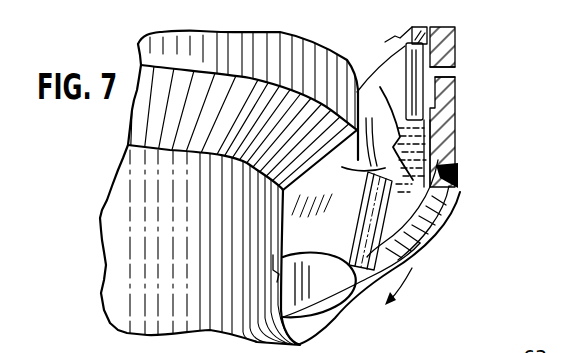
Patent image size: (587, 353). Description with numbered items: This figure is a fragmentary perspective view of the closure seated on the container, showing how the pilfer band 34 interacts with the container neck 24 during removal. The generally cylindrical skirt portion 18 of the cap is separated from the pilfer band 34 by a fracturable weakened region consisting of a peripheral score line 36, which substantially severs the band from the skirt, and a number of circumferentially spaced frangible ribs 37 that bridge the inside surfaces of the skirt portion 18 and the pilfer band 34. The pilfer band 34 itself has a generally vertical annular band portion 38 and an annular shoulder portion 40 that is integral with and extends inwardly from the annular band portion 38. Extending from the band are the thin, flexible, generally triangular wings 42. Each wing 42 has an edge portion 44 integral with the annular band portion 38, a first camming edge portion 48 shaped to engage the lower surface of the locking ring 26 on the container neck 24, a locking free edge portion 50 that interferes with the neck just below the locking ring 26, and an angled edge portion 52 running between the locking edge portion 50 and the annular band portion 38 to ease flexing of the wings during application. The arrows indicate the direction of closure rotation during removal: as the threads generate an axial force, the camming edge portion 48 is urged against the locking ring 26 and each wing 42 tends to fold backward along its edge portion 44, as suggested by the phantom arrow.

The skirt portion 18 is at (455, 30).
The container neck 24 is at (138, 296).
The locking ring 26 is at (233, 115).
The pilfer band 34 is at (468, 123).
The score line 36 is at (432, 72).
The frangible ribs 37 is at (402, 83).
The annular band portion 38 is at (448, 203).
The annular shoulder portion 40 is at (400, 150).
The wings 42 is at (327, 284).
The edge portion 44 is at (385, 242).
The first camming edge portion 48 is at (360, 190).
The locking free edge portion 50 is at (277, 231).
The edge portion 52 is at (335, 290).